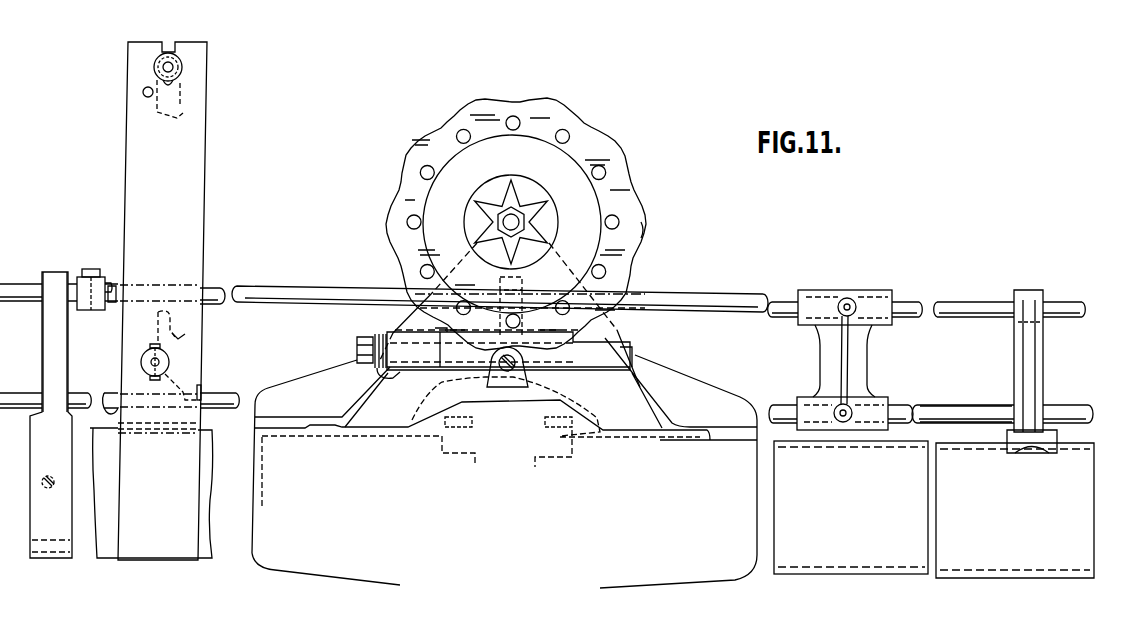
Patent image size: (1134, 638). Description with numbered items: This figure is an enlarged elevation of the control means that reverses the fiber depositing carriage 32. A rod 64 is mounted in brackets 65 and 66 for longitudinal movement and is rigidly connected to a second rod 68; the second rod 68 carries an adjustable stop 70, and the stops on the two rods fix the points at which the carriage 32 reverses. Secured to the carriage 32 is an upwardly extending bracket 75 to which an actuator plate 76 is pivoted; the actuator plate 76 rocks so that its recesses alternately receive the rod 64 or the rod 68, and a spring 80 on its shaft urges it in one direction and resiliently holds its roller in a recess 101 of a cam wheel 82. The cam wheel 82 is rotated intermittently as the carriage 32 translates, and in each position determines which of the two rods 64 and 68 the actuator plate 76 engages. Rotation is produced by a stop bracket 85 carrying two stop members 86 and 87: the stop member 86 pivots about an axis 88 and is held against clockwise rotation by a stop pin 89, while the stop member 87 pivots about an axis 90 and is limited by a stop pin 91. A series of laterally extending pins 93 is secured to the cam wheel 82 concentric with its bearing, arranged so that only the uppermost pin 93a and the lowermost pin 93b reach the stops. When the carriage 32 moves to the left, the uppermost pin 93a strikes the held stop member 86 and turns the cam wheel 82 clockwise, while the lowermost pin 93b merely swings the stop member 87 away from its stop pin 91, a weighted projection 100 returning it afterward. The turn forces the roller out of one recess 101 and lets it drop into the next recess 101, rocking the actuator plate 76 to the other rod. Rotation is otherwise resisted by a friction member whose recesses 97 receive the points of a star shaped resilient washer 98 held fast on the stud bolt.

The carriage 32 is at (695, 385).
The rod 64 is at (942, 408).
The bracket 65 is at (1033, 293).
The bracket 66 is at (61, 273).
The second rod 68 is at (702, 300).
The adjustable stop 70 is at (103, 276).
The bracket 75 is at (637, 382).
The actuator plate 76 is at (519, 291).
The spring 80 is at (494, 346).
The cam wheel 82 is at (531, 212).
The stop bracket 85 is at (197, 236).
The stop member 86 is at (181, 108).
The stop member 87 is at (156, 322).
The axis 88 is at (182, 67).
The stop pin 89 is at (143, 94).
The axis 90 is at (170, 357).
The stop pin 91 is at (182, 335).
The laterally extending pins 93 is at (569, 131).
The uppermost pin 93a is at (520, 118).
The lowermost pin 93b is at (518, 319).
The recesses 97 is at (548, 203).
The star shaped resilient washer 98 is at (545, 236).
The weighted projection 100 is at (185, 388).
The recess 101 is at (642, 230).